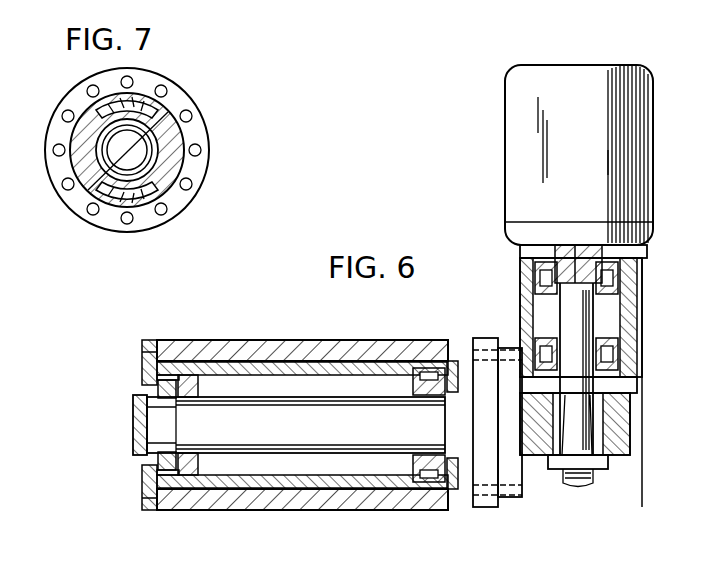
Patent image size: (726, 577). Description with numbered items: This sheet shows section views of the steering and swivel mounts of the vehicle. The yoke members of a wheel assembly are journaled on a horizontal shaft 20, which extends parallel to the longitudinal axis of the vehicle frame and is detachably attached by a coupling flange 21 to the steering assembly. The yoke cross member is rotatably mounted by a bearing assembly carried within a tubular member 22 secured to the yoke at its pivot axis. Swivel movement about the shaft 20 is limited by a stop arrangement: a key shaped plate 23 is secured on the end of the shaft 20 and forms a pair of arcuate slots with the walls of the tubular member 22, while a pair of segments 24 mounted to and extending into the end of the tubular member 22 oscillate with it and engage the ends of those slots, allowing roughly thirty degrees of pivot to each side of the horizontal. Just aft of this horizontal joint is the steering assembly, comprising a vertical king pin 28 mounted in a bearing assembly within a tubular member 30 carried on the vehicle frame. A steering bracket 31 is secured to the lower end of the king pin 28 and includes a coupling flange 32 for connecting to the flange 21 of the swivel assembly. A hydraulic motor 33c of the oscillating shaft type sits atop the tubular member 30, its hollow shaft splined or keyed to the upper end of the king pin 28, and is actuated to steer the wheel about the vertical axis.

In FIG. 7, the shaft 20 is at (140, 163).
In FIG. 6, the shaft 20 is at (348, 405).
In FIG. 6, the coupling flange 21 is at (458, 370).
In FIG. 6, the tubular member 22 is at (305, 355).
In FIG. 7, the key shaped plate 23 is at (190, 142).
In FIG. 6, the key shaped plate 23 is at (295, 425).
In FIG. 7, the segments 24 is at (150, 95).
In FIG. 6, the segments 24 is at (168, 345).
In FIG. 6, the king pin 28 is at (592, 326).
In FIG. 6, the tubular member 30 is at (645, 375).
In FIG. 6, the steering bracket 31 is at (620, 438).
In FIG. 6, the coupling flange 32 is at (516, 345).
In FIG. 6, the hydraulic motor 33c is at (630, 148).